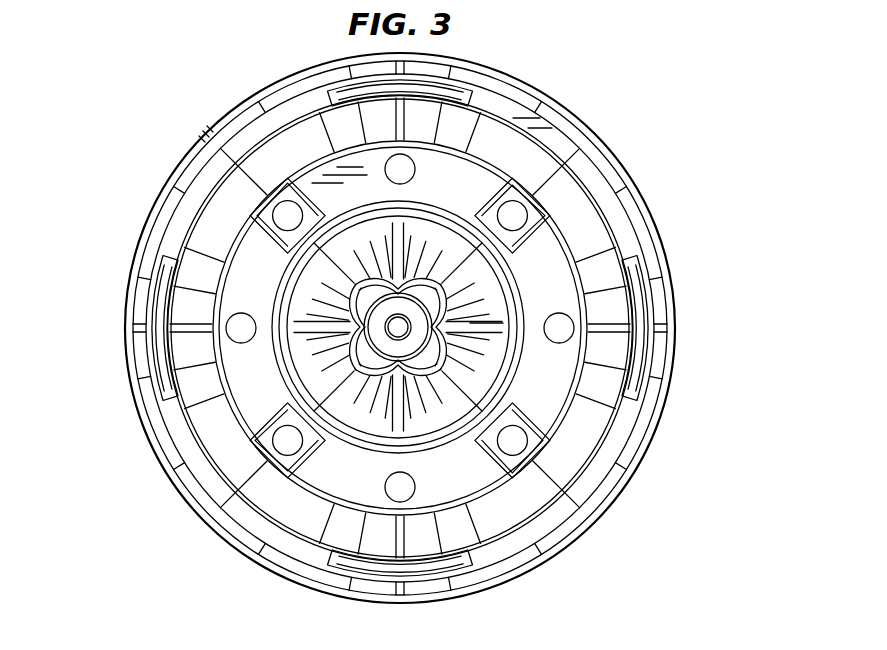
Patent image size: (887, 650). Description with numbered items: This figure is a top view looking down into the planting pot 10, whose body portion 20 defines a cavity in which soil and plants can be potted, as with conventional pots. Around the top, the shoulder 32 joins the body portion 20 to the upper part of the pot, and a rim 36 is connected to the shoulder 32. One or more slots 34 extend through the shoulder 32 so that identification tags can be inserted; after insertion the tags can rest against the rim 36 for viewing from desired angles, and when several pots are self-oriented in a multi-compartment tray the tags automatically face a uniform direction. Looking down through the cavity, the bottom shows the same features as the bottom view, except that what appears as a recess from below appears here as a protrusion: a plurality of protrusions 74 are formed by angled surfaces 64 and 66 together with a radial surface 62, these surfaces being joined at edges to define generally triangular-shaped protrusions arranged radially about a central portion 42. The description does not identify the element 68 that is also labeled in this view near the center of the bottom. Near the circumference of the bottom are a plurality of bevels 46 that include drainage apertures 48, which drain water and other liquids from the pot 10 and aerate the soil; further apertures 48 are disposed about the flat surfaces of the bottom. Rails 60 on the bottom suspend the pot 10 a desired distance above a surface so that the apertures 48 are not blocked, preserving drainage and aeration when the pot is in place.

The planting pot 10 is at (700, 57).
The body portion 20 is at (513, 497).
The shoulder 32 is at (520, 528).
The slots 34 is at (470, 88).
The rim 36 is at (663, 372).
The central portion 42 is at (387, 320).
The bevels 46 is at (277, 190).
The drainage apertures 48 is at (398, 168).
The rails 60 is at (328, 88).
The radial surface 62 is at (487, 364).
The angled surface 64 is at (519, 334).
The angled surface 66 is at (559, 256).
The clover-shaped recess 68 is at (430, 291).
The protrusions 74 is at (526, 291).